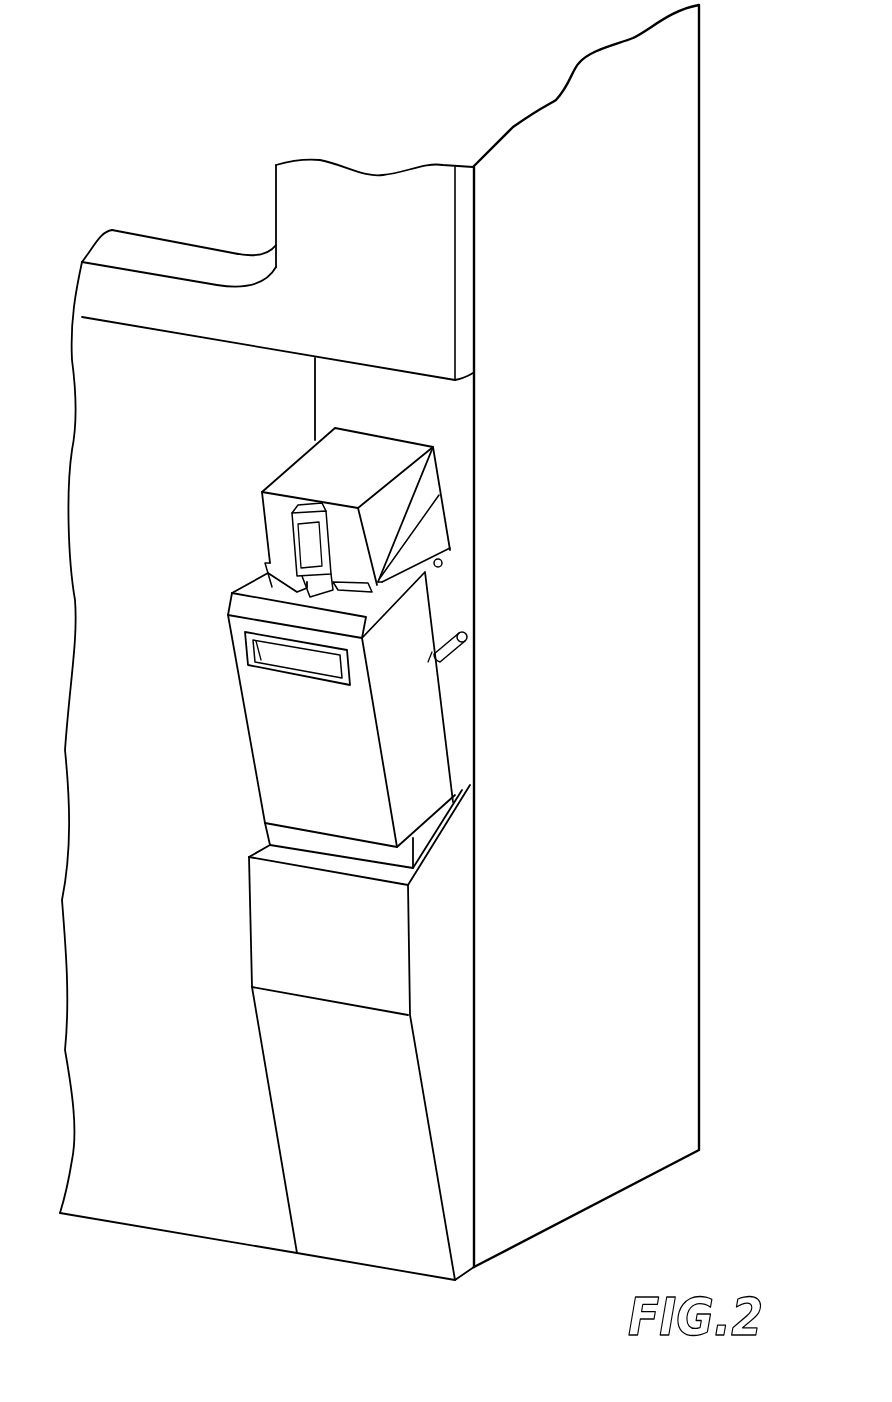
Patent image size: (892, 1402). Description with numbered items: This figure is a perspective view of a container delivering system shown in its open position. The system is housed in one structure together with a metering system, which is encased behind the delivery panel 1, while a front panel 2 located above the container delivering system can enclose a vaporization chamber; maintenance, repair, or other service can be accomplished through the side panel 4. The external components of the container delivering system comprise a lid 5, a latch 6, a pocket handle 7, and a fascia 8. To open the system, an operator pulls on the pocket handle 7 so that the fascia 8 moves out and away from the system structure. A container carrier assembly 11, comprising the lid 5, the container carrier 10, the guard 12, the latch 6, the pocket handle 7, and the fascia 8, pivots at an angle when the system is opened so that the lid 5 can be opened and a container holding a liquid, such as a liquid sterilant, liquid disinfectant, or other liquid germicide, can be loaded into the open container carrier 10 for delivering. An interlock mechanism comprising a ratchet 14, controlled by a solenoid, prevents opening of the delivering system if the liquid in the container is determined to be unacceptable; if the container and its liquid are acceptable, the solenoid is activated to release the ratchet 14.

The delivery panel 1 is at (450, 915).
The front panel 2 is at (428, 308).
The side panel 4 is at (631, 1013).
The lid 5 is at (393, 466).
The latch 6 is at (444, 566).
The pocket handle 7 is at (330, 652).
The fascia 8 is at (360, 783).
The container carrier 10 is at (437, 526).
The container carrier assembly 11 is at (359, 705).
The guard 12 is at (440, 533).
The ratchet 14 is at (466, 640).